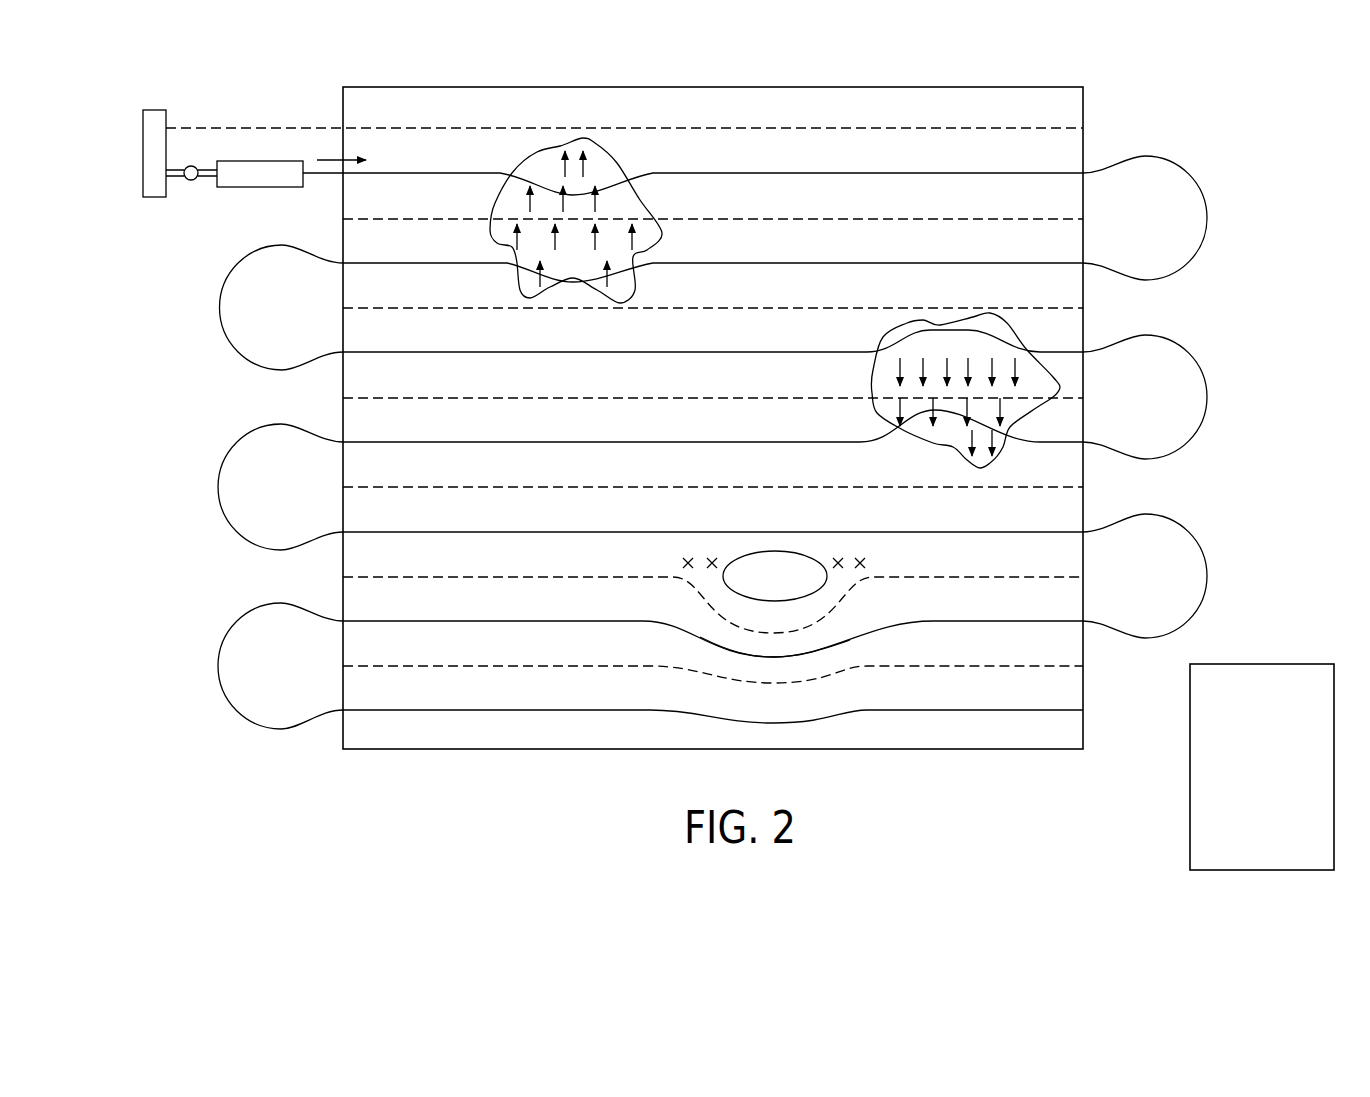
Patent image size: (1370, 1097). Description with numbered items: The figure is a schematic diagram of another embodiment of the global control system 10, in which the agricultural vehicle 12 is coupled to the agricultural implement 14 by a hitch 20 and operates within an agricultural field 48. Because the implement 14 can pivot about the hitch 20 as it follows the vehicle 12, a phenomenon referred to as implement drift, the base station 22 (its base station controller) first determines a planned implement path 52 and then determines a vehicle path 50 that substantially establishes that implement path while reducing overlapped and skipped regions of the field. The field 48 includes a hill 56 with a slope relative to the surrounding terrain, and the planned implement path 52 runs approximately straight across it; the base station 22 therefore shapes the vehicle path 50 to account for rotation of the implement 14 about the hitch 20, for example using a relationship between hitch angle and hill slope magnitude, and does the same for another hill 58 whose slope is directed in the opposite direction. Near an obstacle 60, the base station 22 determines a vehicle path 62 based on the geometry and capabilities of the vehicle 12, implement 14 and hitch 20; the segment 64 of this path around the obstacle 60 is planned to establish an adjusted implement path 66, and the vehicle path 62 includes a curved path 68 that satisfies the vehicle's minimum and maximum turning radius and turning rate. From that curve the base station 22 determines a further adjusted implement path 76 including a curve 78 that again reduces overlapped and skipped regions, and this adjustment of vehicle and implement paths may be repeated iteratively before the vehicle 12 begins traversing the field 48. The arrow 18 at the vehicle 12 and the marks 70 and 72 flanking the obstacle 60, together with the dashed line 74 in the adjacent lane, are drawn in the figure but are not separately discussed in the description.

The global control system 10 is at (1158, 91).
The agricultural vehicle 12 is at (260, 187).
The agricultural implement 14 is at (143, 157).
The flow direction arrow 18 is at (328, 160).
The hitch 20 is at (191, 181).
The base station 22 is at (1190, 785).
The agricultural field 48 is at (1083, 688).
The vehicle path 50 is at (783, 173).
The implement path 52 is at (693, 128).
The hill 56 is at (537, 152).
The hill 58 is at (1013, 340).
The obstacle 60 is at (743, 553).
The vehicle path 62 is at (933, 622).
The segment 64 is at (896, 606).
The adjusted implement path 66 is at (707, 608).
The curved path 68 is at (790, 658).
The first contact points 70 is at (712, 554).
The second contact points 72 is at (838, 554).
The adjacent tube center line 74 is at (480, 668).
The adjusted implement path 76 is at (684, 697).
The curve 78 is at (730, 680).